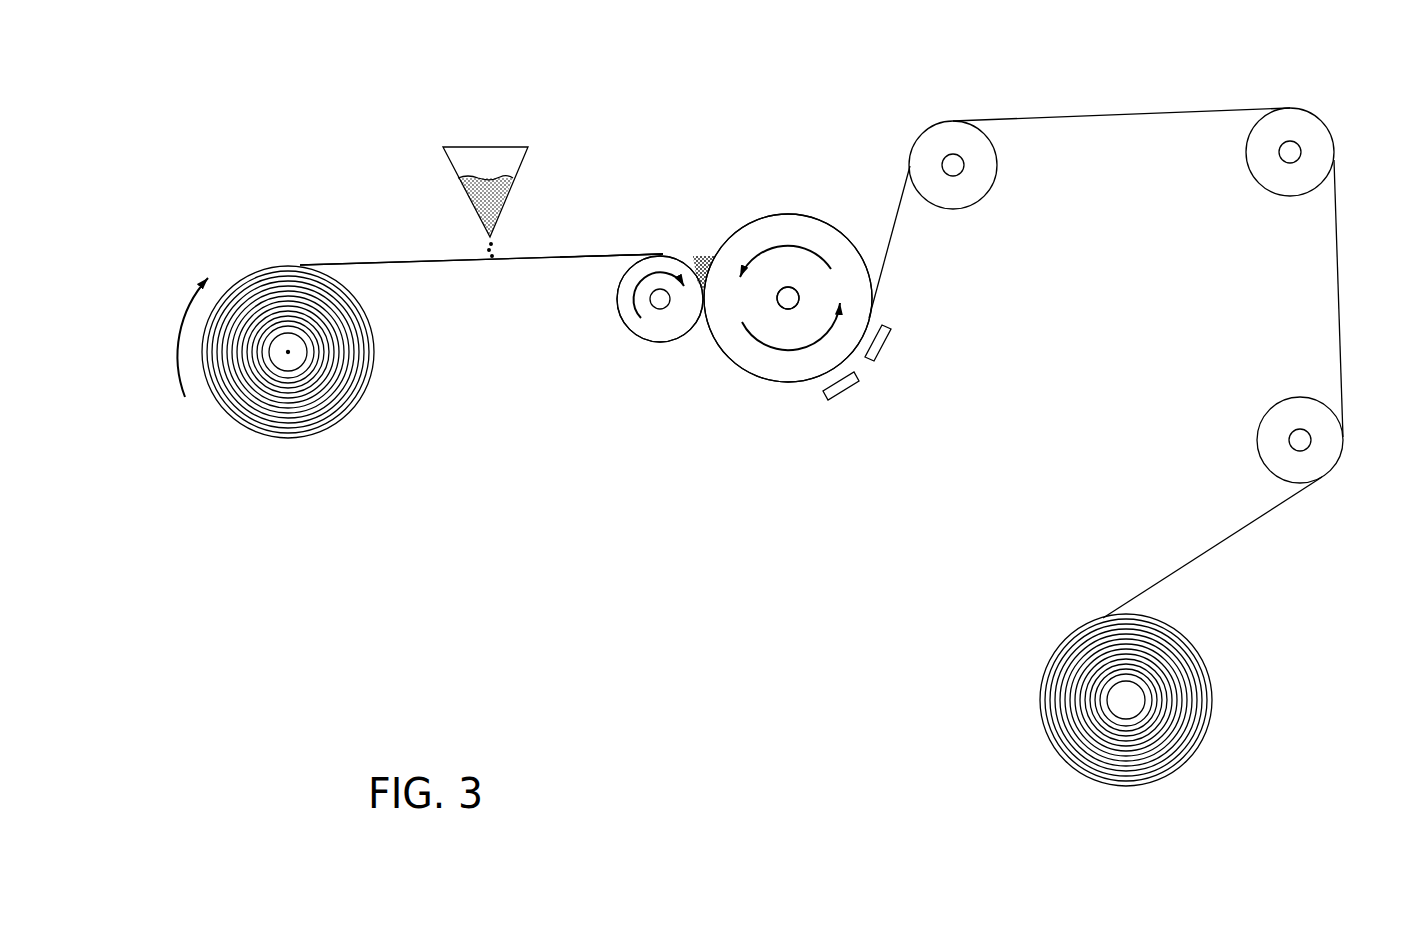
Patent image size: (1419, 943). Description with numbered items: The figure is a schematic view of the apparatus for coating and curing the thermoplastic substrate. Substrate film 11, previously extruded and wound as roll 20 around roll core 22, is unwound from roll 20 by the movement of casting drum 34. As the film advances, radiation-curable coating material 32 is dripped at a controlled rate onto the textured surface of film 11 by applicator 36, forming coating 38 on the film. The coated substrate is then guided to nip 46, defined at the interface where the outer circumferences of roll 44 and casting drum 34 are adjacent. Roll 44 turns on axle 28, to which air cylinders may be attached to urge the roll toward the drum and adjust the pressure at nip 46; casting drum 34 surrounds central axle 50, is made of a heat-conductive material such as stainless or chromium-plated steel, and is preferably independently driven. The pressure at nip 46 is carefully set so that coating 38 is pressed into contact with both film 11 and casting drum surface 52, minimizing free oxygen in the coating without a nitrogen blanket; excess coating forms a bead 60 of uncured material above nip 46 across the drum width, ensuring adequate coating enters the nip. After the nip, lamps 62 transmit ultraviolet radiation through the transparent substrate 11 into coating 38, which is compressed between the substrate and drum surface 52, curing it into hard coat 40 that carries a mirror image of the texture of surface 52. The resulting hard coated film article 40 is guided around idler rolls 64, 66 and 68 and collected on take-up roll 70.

The thermoplastic resin film 11 is at (305, 262).
The roll 20 is at (377, 366).
The roll core 22 is at (288, 352).
The axle 28 is at (658, 306).
The radiation-curable coating material 32 is at (510, 195).
The casting drum 34 is at (777, 388).
The applicator 36 is at (500, 137).
The radiation-curable coating 38 is at (604, 255).
The cured hard coat 40 is at (1067, 117).
The roll 44 is at (617, 327).
The nip 46 is at (702, 336).
The central axle 50 is at (797, 300).
The casting drum surface 52 is at (770, 215).
The bead 60 is at (701, 257).
The lamps 62 is at (890, 329).
The idler roll 64 is at (978, 204).
The idler roll 66 is at (1255, 184).
The idler roll 68 is at (1253, 431).
The take-up roll 70 is at (1226, 703).